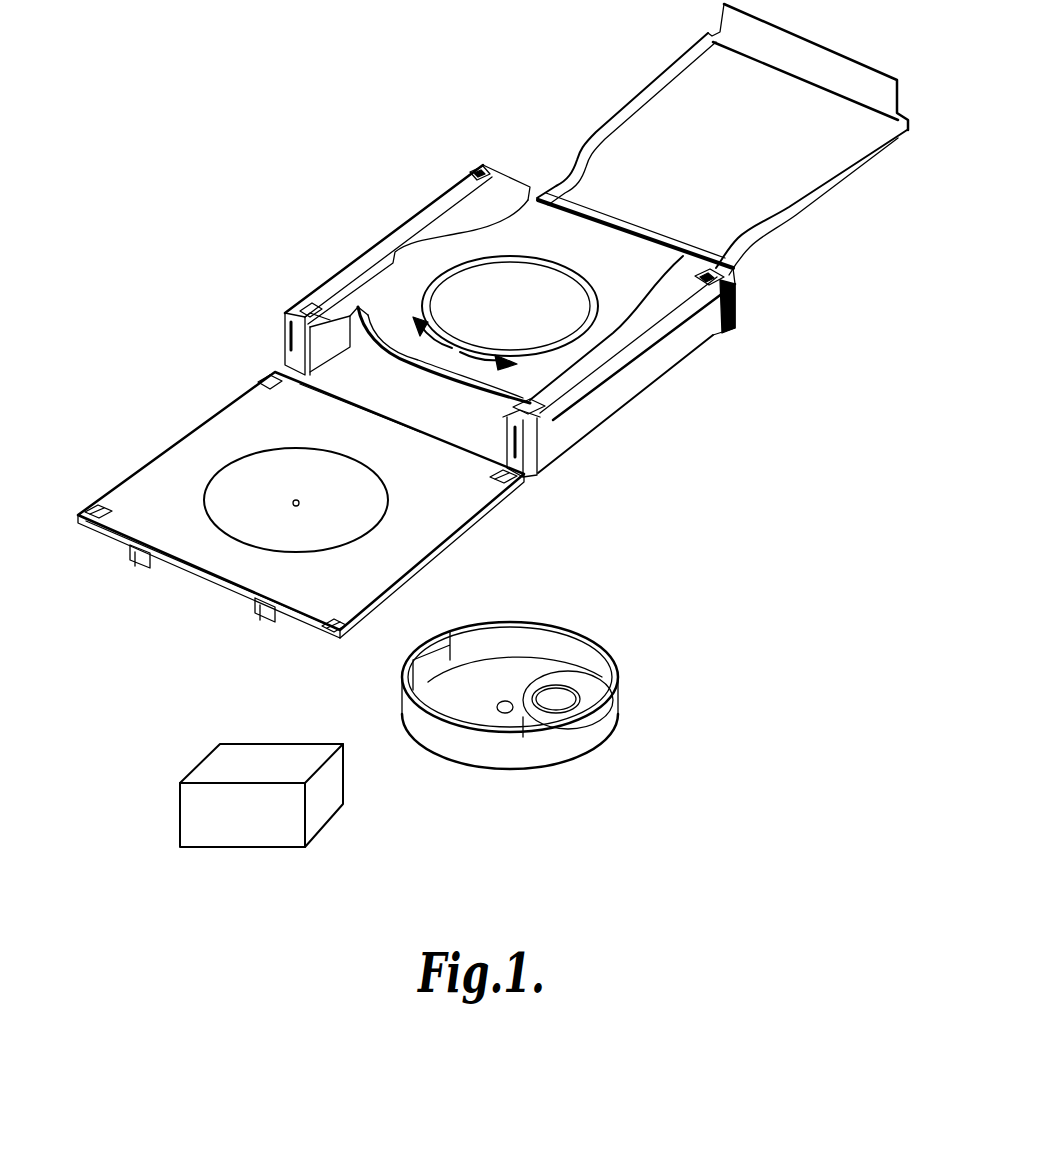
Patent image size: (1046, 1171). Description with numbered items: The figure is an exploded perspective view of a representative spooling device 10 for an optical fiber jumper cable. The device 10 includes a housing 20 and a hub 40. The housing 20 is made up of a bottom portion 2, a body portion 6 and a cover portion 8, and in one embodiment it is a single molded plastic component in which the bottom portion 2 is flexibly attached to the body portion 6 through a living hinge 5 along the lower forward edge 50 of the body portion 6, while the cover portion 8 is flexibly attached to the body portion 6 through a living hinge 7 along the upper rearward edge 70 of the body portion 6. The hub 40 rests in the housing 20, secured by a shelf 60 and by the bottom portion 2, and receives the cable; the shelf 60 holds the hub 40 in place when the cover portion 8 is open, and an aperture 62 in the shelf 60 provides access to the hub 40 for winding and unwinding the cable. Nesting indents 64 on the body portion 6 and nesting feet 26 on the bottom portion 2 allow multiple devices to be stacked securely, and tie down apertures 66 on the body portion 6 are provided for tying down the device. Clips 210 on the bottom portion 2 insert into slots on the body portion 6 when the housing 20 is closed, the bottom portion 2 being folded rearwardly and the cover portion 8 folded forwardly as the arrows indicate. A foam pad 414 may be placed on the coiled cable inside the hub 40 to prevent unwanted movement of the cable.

The spooling device 10 is at (328, 137).
The bottom portion 2 is at (343, 569).
The living hinge 5 is at (370, 412).
The body portion 6 is at (652, 358).
The living hinge 7 is at (588, 213).
The cover portion 8 is at (668, 212).
The housing 20 is at (392, 236).
The nesting feet 26 is at (335, 614).
The hub 40 is at (625, 697).
The lower forward edge 50 is at (330, 395).
The shelf 60 is at (613, 290).
The aperture 62 is at (550, 338).
The nesting indents 64 is at (297, 305).
The tie down apertures 66 is at (478, 170).
The upper rearward edge 70 is at (607, 220).
The clips 210 is at (250, 608).
The foam pad 414 is at (222, 812).